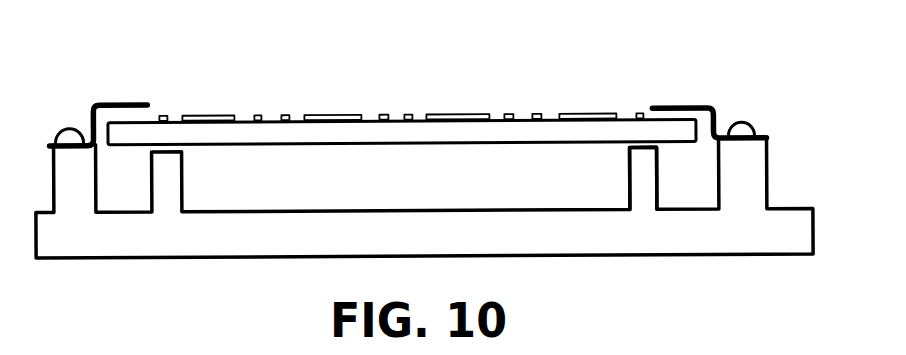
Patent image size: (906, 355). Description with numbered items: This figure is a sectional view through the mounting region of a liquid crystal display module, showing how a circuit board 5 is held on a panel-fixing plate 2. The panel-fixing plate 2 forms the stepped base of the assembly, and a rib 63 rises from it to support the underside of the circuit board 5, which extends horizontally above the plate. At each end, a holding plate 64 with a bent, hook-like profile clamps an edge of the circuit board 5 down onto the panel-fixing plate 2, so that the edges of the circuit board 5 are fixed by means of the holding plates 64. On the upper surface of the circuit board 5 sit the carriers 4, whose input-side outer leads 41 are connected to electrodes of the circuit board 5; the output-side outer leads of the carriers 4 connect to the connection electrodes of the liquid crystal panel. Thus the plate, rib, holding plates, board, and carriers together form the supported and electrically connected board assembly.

The panel-fixing plate 2 is at (460, 232).
The carrier 4 is at (205, 114).
The input-side outer leads 41 is at (175, 114).
The circuit board 5 is at (595, 114).
The rib 63 is at (638, 173).
The holding plate 64 is at (118, 96).